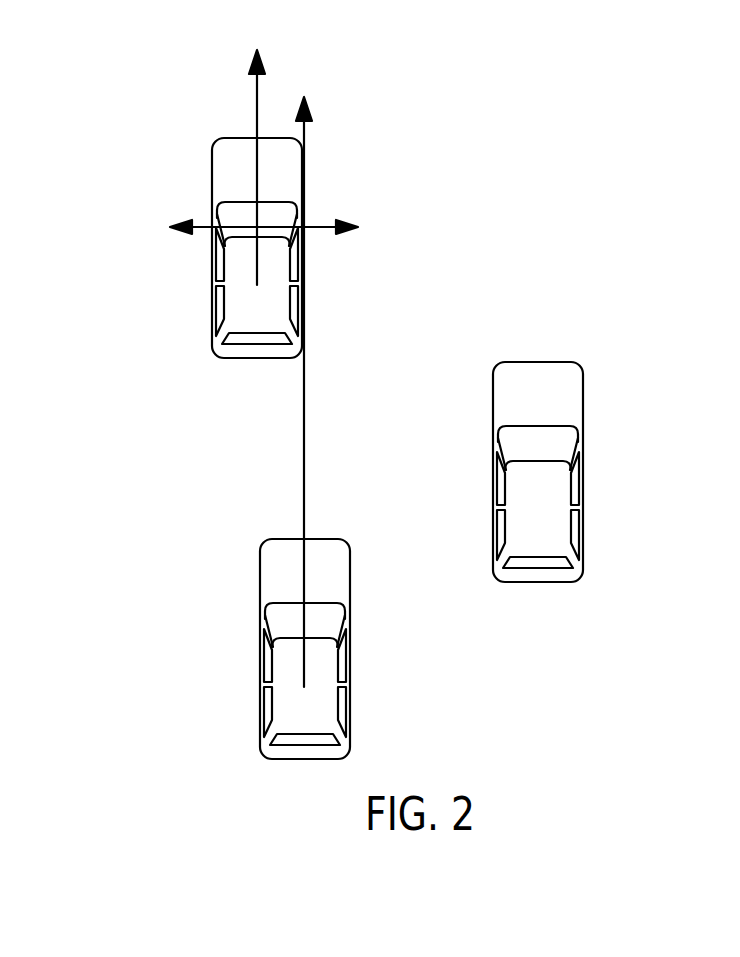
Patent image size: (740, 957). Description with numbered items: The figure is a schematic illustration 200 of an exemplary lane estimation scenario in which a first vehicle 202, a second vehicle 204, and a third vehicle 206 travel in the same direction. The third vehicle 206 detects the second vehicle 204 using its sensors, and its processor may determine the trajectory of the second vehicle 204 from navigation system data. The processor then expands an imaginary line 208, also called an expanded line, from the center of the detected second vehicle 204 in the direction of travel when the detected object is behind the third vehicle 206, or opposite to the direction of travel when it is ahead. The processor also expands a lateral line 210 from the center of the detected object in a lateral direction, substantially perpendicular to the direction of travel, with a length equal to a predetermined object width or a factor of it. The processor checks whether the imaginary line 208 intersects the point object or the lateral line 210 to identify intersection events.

The illustration 200 is at (345, 400).
The first vehicle 202 is at (580, 370).
The second vehicle 204 is at (262, 548).
The third vehicle 206 is at (213, 148).
The imaginary line 208 is at (304, 427).
The lateral line 210 is at (322, 224).